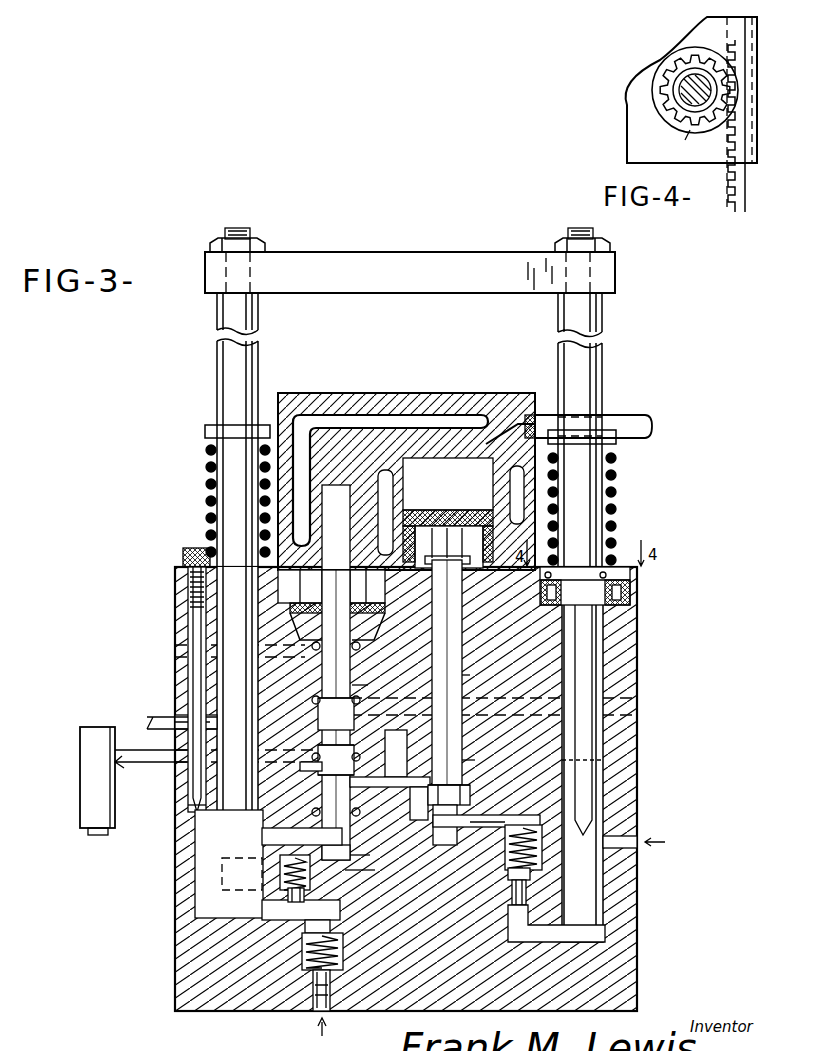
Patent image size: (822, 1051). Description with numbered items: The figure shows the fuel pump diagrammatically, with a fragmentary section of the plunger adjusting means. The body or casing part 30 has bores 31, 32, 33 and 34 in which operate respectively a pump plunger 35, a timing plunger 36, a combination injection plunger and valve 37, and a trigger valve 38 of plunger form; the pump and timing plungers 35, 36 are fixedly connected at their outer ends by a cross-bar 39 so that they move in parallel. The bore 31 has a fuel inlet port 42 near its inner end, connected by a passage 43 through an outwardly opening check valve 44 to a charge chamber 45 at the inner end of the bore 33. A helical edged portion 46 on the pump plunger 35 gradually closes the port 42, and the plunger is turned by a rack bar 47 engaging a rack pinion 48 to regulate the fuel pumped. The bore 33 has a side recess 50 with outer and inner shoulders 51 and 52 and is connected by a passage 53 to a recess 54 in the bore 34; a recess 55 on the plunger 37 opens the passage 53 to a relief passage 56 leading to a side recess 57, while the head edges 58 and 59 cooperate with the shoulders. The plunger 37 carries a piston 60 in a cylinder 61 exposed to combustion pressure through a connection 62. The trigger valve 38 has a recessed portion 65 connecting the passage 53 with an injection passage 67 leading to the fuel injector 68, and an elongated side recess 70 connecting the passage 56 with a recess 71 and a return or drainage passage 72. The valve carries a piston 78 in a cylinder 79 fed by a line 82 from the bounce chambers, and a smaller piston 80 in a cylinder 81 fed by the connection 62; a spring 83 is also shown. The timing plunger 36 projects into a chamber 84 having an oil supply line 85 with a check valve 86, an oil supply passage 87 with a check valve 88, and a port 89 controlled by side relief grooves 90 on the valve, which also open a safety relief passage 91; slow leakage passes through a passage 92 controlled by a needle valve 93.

In FIG. 3, the body or casing part 30 is at (615, 684).
In FIG. 4, the body or casing part 30 is at (624, 147).
In FIG. 3, the bore 31 is at (608, 627).
In FIG. 3, the bore 32 is at (186, 600).
In FIG. 3, the bore 33 is at (466, 684).
In FIG. 3, the bore 34 is at (352, 660).
In FIG. 3, the pump plunger 35 is at (582, 747).
In FIG. 4, the pump plunger 35 is at (672, 86).
In FIG. 3, the timing plunger 36 is at (237, 525).
In FIG. 3, the combination injection plunger and valve 37 is at (447, 672).
In FIG. 3, the trigger valve 38 is at (337, 631).
In FIG. 3, the cross-bar 39 is at (510, 262).
In FIG. 3, the fuel inlet port 42 is at (645, 848).
In FIG. 3, the passage 43 is at (515, 945).
In FIG. 3, the check valve 44 is at (510, 890).
In FIG. 3, the charge chamber 45 is at (488, 850).
In FIG. 3, the helical edged portion 46 is at (595, 810).
In FIG. 3, the rack bar 47 is at (632, 588).
In FIG. 4, the rack bar 47 is at (740, 197).
In FIG. 3, the rack pinion 48 is at (548, 595).
In FIG. 4, the rack pinion 48 is at (686, 135).
In FIG. 3, the side recess 50 is at (470, 798).
In FIG. 3, the outer shoulder 51 is at (472, 790).
In FIG. 3, the inner shoulder 52 is at (472, 830).
In FIG. 3, the passage 53 is at (417, 806).
In FIG. 3, the recess 54 is at (351, 791).
In FIG. 3, the recess 55 is at (390, 773).
In FIG. 3, the relief passage 56 is at (397, 753).
In FIG. 3, the side recess 57 is at (312, 737).
In FIG. 3, the edge 58 is at (463, 764).
In FIG. 3, the edge 59 is at (466, 816).
In FIG. 3, the piston 60 is at (490, 512).
In FIG. 3, the cylinder 61 is at (451, 506).
In FIG. 3, the connection 62 is at (636, 428).
In FIG. 3, the recessed portion 65 is at (354, 760).
In FIG. 3, the injection passage 67 is at (120, 764).
In FIG. 3, the fuel injector 68 is at (80, 806).
In FIG. 3, the elongated side recess 70 is at (336, 718).
In FIG. 3, the recess 71 is at (369, 690).
In FIG. 3, the return or drainage passage 72 is at (162, 716).
In FIG. 3, the piston 78 is at (386, 608).
In FIG. 3, the cylinder 79 is at (378, 583).
In FIG. 3, the smaller piston 80 is at (336, 554).
In FIG. 3, the cylinder 81 is at (336, 527).
In FIG. 3, the line 82 is at (237, 491).
In FIG. 3, the spring 83 is at (582, 497).
In FIG. 3, the chamber 84 is at (229, 864).
In FIG. 3, the oil supply line 85 is at (310, 1005).
In FIG. 3, the check valve 86 is at (304, 966).
In FIG. 3, the oil supply passage 87 is at (306, 882).
In FIG. 3, the check valve 88 is at (268, 908).
In FIG. 3, the port 89 is at (300, 838).
In FIG. 3, the side relief grooves 90 is at (371, 876).
In FIG. 3, the safety relief passage 91 is at (371, 851).
In FIG. 3, the passage 92 is at (190, 808).
In FIG. 3, the needle valve 93 is at (178, 739).